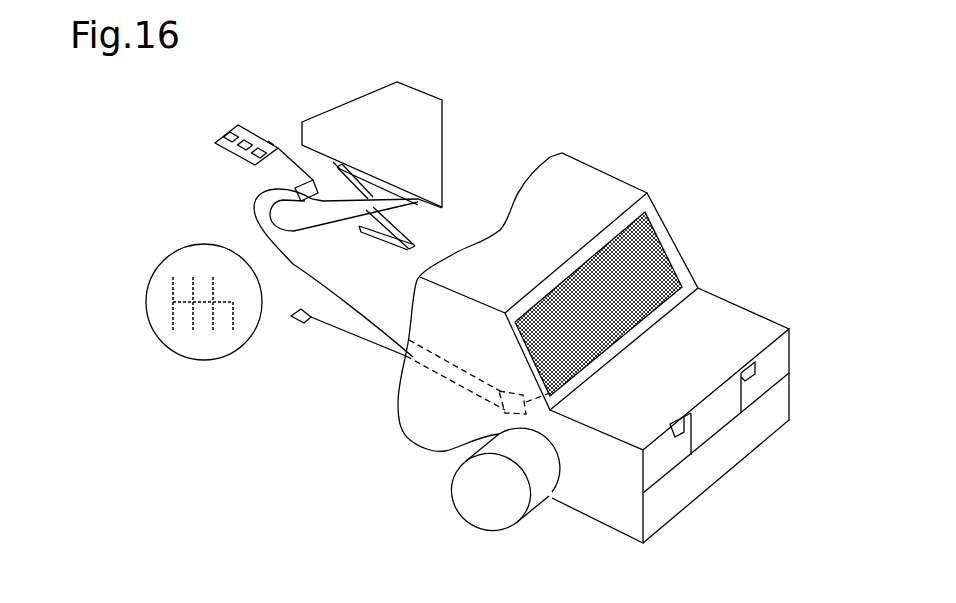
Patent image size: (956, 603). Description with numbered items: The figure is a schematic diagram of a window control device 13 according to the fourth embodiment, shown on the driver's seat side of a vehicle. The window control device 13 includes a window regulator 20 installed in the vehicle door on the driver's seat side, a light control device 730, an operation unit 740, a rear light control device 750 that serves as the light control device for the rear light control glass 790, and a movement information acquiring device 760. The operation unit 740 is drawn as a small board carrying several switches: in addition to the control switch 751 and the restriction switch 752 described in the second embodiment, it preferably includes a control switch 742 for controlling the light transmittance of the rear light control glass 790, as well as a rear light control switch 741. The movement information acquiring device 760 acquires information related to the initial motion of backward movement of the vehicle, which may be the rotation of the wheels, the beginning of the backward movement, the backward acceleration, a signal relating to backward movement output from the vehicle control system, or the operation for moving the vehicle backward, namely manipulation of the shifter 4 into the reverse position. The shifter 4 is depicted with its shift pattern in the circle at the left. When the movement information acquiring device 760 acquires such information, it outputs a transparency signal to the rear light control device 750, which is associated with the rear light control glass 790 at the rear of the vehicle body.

The shifter 4 is at (172, 254).
The window control device 13 is at (288, 418).
The window regulator 20 is at (450, 210).
The light control device 730 is at (292, 183).
The operation unit 740 is at (218, 141).
The rear light control switch 741 is at (226, 133).
The control switch 742 is at (271, 140).
The rear light control device 750 is at (499, 412).
The control switch 751 is at (266, 142).
The restriction switch 752 is at (243, 135).
The movement information acquiring device 760 is at (299, 325).
The rear light control glass 790 is at (677, 243).